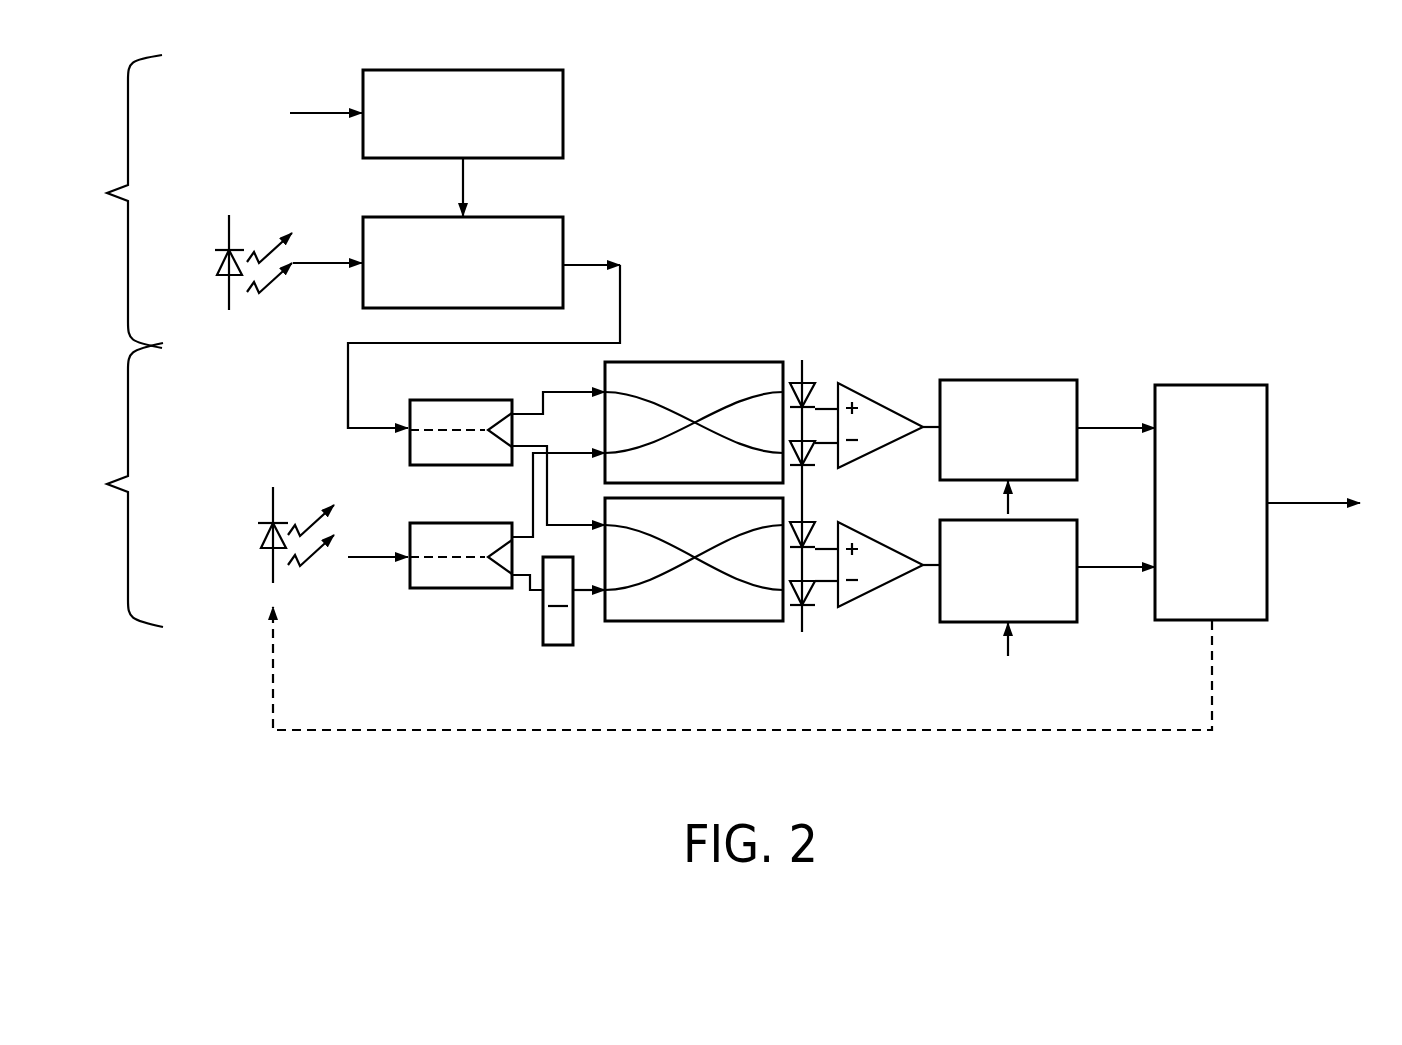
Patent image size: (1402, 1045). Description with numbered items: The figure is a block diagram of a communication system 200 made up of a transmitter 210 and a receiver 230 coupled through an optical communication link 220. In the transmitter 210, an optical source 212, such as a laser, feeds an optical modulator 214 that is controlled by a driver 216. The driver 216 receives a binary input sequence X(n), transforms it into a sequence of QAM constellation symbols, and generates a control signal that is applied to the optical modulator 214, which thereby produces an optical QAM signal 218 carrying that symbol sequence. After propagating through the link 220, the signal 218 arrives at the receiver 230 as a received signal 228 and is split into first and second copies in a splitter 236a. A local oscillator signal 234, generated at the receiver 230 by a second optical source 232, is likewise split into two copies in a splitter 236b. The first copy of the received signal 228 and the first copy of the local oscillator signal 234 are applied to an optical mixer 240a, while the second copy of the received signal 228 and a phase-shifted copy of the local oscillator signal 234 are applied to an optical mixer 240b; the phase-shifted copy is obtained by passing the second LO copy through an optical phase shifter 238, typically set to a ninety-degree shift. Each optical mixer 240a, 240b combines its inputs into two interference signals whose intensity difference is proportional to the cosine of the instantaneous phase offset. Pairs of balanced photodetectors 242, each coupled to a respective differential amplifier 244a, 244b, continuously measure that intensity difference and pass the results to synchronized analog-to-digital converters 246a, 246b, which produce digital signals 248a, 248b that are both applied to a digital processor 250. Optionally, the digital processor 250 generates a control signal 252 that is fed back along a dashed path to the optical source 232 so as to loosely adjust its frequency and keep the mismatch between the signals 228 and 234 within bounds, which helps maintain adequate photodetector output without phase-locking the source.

The communication system 200 is at (222, 753).
The transmitter 210 is at (110, 201).
The optical source 212 is at (219, 273).
The optical modulator 214 is at (531, 217).
The driver 216 is at (494, 70).
The optical QAM signal 218 is at (587, 265).
The optical communication link 220 is at (621, 311).
The received signal 228 is at (369, 436).
The receiver 230 is at (110, 485).
The optical source 232 is at (261, 547).
The local oscillator signal 234 is at (371, 557).
The splitter 236a is at (433, 400).
The splitter 236b is at (457, 588).
The optical phase shifter 238 is at (560, 645).
The optical mixer 240a is at (692, 362).
The optical mixer 240b is at (667, 622).
The balanced photodetectors 242 is at (803, 381).
The differential amplifier 244a is at (873, 397).
The differential amplifier 244b is at (872, 604).
The analog-to-digital converter 246a is at (1008, 380).
The analog-to-digital converter 246b is at (1060, 623).
The digital signal 248a is at (1098, 427).
The digital signal 248b is at (1103, 566).
The digital processor 250 is at (1212, 385).
The control signal 252 is at (1212, 708).